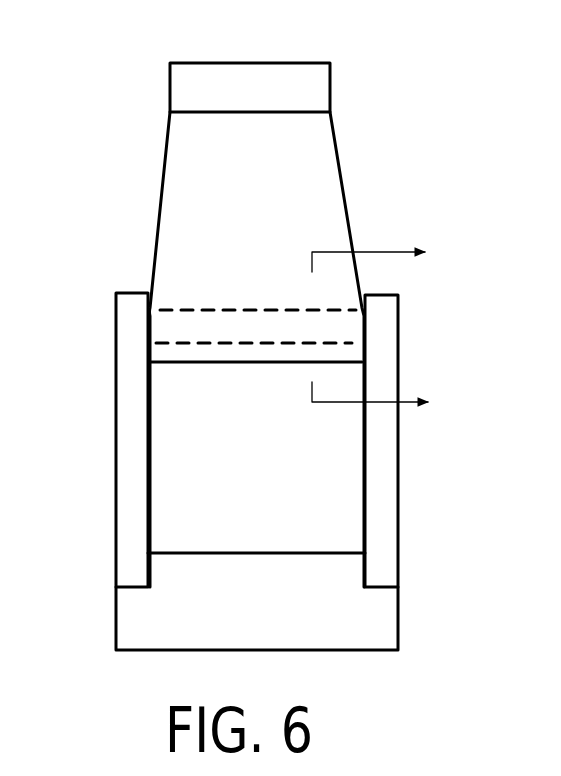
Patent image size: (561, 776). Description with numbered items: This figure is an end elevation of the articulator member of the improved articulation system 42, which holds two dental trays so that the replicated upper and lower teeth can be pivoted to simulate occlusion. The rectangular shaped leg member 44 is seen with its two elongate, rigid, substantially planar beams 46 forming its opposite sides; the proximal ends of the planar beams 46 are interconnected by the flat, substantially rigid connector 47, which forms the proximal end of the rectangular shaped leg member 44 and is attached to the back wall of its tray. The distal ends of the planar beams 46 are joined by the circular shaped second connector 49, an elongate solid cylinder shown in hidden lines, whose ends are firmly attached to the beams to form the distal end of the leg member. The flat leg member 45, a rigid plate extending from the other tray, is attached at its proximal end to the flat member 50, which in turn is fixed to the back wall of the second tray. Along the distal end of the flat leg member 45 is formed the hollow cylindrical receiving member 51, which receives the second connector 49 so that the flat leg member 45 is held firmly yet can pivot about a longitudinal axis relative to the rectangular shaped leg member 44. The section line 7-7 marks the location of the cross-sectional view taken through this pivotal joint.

The section line 7- 7 is at (384, 326).
The articulation system 42 is at (254, 469).
The rectangular shaped leg member 44 is at (265, 489).
The flat leg member 45 is at (303, 190).
The planar beams 46 is at (133, 432).
The flat connector 47 is at (150, 613).
The second connector 49 is at (227, 315).
The flat member 50 is at (200, 84).
The hollow cylindrical receiving member 51 is at (240, 362).